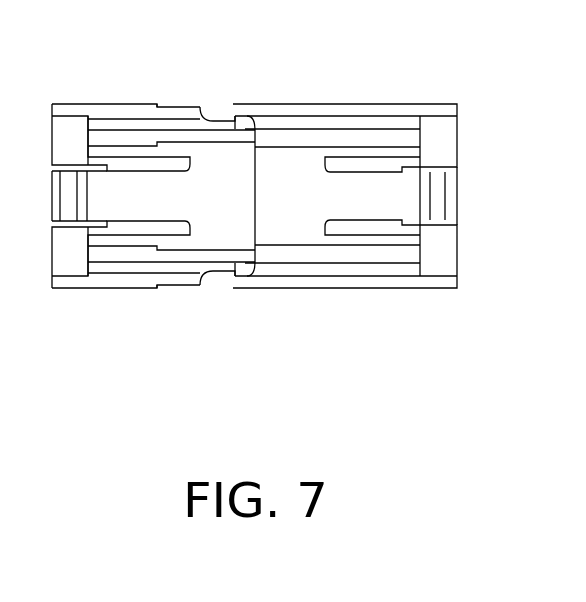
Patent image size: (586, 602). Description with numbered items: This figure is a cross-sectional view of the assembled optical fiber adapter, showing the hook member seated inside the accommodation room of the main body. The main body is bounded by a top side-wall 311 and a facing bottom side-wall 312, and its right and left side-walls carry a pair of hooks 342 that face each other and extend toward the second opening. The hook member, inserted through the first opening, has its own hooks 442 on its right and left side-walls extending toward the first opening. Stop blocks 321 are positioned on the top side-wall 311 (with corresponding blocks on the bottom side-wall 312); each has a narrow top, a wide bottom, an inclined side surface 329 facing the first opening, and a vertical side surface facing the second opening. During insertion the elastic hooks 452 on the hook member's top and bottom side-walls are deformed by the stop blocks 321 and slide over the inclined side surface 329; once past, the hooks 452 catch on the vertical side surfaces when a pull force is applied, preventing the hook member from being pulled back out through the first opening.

The top side-wall 311 is at (363, 288).
The bottom side-wall 312 is at (350, 103).
The stop block 321 is at (229, 120).
The inclined side surface 329 is at (201, 104).
The hook 342 is at (442, 193).
The hook 442 is at (78, 196).
The elastic hook 452 is at (248, 118).